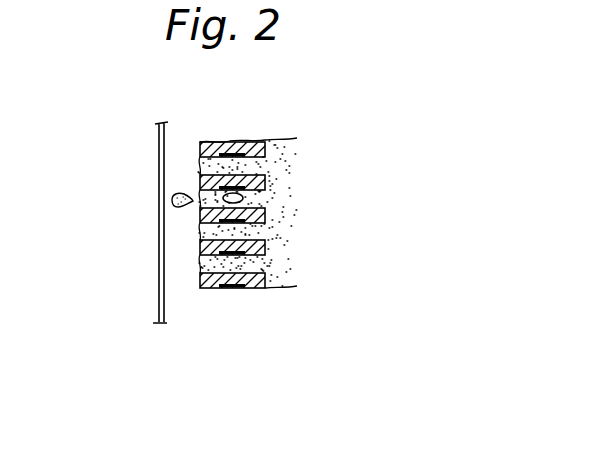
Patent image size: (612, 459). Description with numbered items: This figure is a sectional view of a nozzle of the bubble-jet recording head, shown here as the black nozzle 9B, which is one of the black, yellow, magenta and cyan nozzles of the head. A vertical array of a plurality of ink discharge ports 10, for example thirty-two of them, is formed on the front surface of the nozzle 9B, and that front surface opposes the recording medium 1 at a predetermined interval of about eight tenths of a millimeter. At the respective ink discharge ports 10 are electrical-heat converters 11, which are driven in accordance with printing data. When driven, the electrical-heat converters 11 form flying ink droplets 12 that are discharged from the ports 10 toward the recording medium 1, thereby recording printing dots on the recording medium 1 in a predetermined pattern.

The recording medium 1 is at (167, 316).
The black nozzle 9B is at (300, 144).
The ink discharge ports 10 is at (207, 161).
The electrical-heat converters 11 is at (238, 160).
The flying ink droplets 12 is at (172, 200).